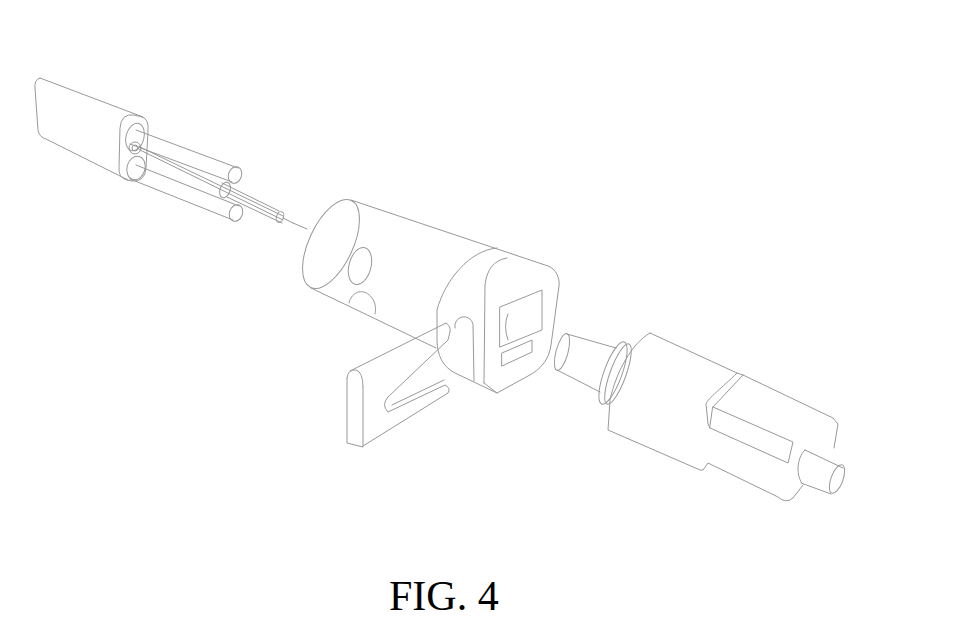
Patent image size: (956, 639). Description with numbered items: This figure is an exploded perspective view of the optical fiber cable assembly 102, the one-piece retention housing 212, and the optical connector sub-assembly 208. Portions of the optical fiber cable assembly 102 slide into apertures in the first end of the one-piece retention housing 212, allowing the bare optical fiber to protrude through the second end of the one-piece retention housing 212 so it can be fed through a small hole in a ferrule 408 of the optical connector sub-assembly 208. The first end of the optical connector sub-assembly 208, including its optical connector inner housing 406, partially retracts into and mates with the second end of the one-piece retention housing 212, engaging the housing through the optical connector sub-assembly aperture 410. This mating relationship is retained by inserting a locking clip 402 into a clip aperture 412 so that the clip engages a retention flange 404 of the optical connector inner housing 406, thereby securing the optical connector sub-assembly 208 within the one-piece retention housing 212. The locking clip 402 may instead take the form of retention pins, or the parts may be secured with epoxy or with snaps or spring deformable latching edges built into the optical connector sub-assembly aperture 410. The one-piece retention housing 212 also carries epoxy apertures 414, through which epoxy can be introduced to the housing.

The optical fiber cable assembly 102 is at (160, 92).
The one-piece retention housing 212 is at (425, 289).
The epoxy apertures 414 is at (355, 263).
The optical connector sub-assembly aperture 410 is at (522, 315).
The clip aperture 412 is at (462, 367).
The locking clip 402 is at (343, 383).
The retention flange 404 is at (617, 347).
The optical connector inner housing 406 is at (585, 362).
The optical connector sub-assembly 208 is at (728, 426).
The ferrule 408 is at (833, 490).